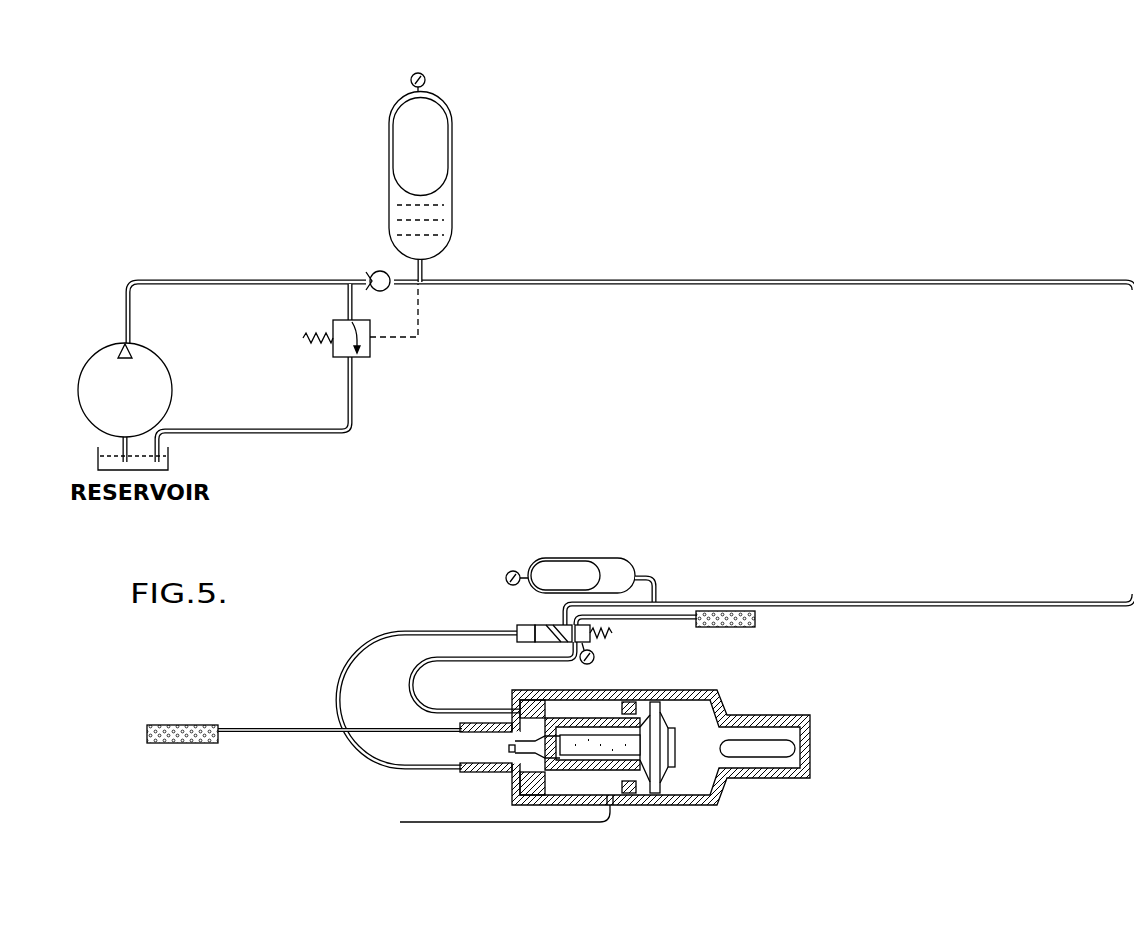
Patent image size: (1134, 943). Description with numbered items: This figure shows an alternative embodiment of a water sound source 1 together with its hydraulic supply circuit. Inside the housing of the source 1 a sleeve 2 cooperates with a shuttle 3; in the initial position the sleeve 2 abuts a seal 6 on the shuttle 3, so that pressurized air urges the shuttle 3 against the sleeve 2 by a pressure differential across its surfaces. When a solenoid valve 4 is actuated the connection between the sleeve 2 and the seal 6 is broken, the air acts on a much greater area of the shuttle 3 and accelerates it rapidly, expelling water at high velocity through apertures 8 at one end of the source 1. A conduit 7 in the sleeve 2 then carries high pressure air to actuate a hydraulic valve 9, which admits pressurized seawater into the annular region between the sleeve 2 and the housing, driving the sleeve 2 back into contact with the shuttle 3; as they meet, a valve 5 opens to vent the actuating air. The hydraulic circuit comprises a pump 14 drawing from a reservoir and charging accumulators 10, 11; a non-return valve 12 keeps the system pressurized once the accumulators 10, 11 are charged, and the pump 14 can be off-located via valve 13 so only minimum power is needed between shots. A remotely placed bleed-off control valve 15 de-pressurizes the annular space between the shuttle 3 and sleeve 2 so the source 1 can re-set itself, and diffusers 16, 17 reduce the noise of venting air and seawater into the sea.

The water sound source 1 is at (712, 697).
The sleeve 2 is at (540, 703).
The shuttle 3 is at (660, 712).
The solenoid valve 4 is at (495, 750).
The valve 5 is at (628, 712).
The seal 6 is at (666, 750).
The conduit 7 is at (612, 795).
The apertures 8 is at (765, 757).
The hydraulic valve 9 is at (540, 630).
The accumulator 10 is at (612, 570).
The accumulator 11 is at (440, 215).
The non-return valve 12 is at (373, 272).
The valve 13 is at (370, 351).
The pump 14 is at (153, 362).
The control valve 15 is at (296, 730).
The diffuser 16 is at (196, 727).
The diffuser 17 is at (752, 628).